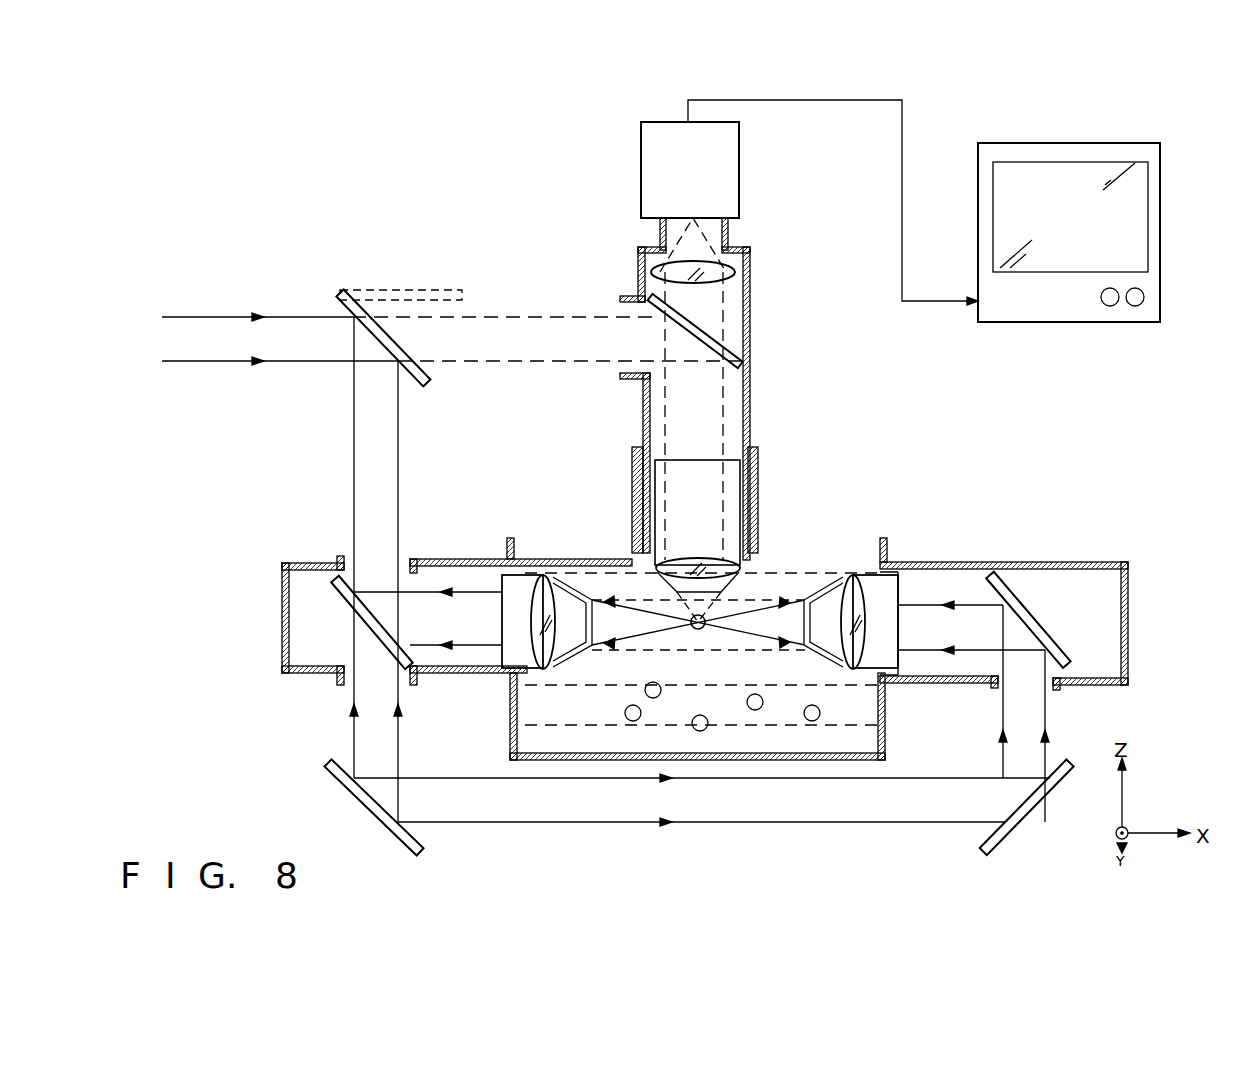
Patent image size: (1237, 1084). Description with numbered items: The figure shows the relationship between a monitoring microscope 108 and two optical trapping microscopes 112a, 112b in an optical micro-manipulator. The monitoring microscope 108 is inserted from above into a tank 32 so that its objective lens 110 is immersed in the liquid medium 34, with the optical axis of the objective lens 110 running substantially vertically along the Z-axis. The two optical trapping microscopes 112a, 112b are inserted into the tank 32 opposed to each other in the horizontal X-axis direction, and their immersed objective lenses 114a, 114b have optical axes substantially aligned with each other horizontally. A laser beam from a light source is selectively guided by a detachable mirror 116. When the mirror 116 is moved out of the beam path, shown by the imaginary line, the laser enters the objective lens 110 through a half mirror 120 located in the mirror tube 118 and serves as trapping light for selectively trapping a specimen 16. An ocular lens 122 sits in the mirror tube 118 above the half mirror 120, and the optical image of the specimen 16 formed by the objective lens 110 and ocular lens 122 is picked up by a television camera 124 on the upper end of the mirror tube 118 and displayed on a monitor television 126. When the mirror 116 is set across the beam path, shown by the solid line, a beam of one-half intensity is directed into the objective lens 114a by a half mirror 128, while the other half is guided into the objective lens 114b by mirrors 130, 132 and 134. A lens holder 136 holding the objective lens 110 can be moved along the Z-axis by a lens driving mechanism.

The television camera 124 is at (739, 150).
The monitor television 126 is at (1082, 143).
The ocular lens 122 is at (735, 263).
The half mirror 120 is at (742, 355).
The mirror tube 118 is at (750, 398).
The monitoring microscope 108 is at (755, 318).
The lens holder 136 is at (760, 477).
The objective lens 110 is at (738, 572).
The detachable mirror 116 is at (428, 290).
The optical trapping microscope 112a is at (444, 548).
The optical trapping microscope 112b is at (972, 557).
The objective lens 114a is at (555, 560).
The objective lens 114b is at (850, 560).
The half mirror 128 is at (355, 612).
The mirror 130 is at (350, 795).
The mirror 132 is at (1028, 820).
The mirror 134 is at (1025, 607).
The tank 32 is at (657, 677).
The liquid medium 34 is at (530, 733).
The specimen 16 is at (698, 630).